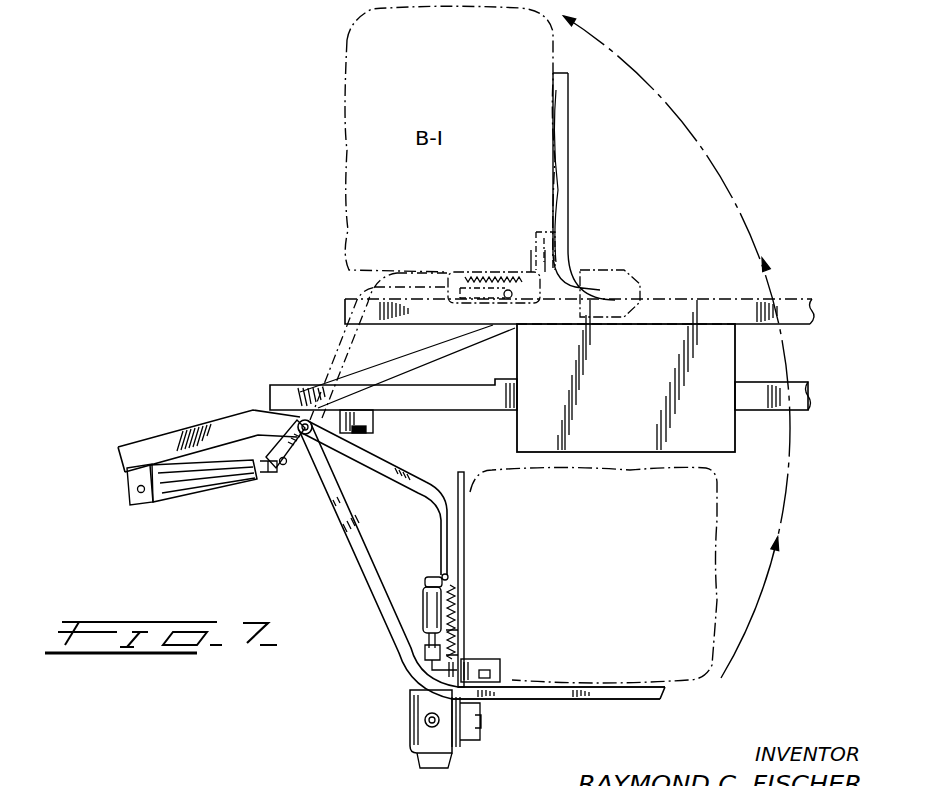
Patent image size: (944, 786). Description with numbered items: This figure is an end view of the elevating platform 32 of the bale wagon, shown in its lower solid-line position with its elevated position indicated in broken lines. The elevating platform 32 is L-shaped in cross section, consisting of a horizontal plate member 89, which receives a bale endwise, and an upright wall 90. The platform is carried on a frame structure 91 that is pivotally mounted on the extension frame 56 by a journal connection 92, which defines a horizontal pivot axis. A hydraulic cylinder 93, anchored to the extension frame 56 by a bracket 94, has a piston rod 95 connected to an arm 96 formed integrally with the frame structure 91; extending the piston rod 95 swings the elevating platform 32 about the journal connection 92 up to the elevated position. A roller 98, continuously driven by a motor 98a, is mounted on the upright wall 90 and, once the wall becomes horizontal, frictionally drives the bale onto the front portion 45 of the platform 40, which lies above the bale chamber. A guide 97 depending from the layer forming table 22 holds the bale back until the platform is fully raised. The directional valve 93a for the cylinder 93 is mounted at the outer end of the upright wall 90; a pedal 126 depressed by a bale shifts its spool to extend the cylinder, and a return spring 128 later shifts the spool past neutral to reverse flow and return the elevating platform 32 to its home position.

The layer forming table 22 is at (676, 283).
The elevating platform 32 is at (726, 506).
The platform 40 is at (806, 298).
The front portion of the platform 45 is at (423, 292).
The extension frame structure 56 is at (291, 384).
The horizontal plate member 89 is at (663, 691).
The upright wall 90 is at (463, 476).
The frame structure 91 is at (412, 488).
The journal connection 92 is at (373, 431).
The hydraulic cylinder 93 is at (213, 481).
The directional valve 93a is at (427, 588).
The bracket 94 is at (133, 475).
The piston rod 95 is at (266, 474).
The arm 96 is at (300, 455).
The guide 97 is at (646, 395).
The roller 98 is at (463, 607).
The motor 98a is at (455, 754).
The pedal 126 is at (498, 667).
The return spring 128 is at (462, 633).